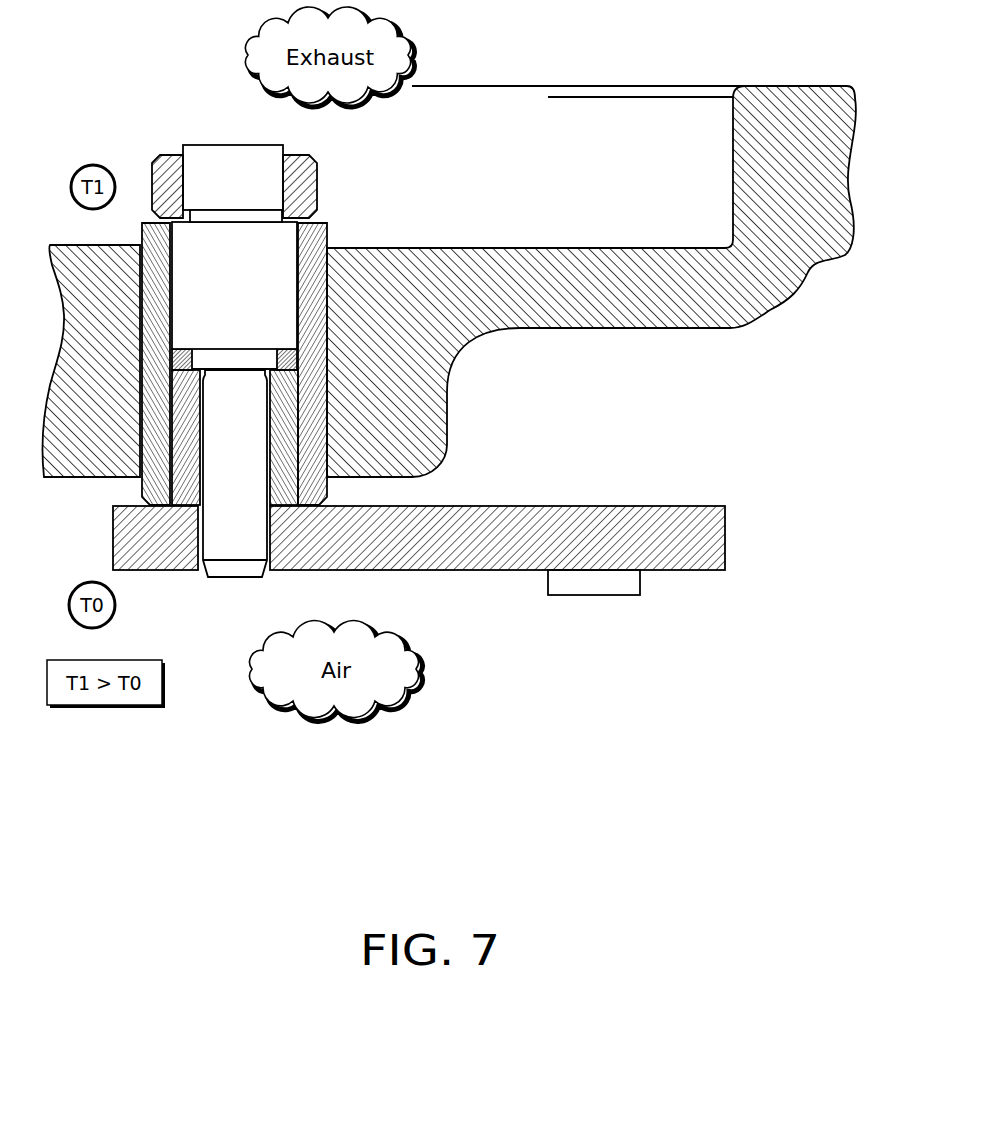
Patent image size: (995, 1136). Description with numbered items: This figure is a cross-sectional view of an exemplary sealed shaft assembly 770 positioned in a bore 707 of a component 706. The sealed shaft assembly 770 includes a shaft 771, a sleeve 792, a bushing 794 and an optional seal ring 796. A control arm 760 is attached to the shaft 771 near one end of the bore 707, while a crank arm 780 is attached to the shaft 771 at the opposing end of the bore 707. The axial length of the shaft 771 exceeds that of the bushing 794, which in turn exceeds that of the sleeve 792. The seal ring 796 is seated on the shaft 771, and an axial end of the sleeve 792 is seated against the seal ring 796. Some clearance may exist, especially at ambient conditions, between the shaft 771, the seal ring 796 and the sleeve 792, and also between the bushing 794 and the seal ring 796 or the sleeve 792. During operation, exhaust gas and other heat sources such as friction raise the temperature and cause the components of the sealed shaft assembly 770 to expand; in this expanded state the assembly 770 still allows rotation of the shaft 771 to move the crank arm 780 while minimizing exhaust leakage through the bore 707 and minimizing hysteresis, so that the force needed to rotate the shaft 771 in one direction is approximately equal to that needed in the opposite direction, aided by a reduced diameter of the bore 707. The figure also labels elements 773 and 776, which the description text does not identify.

The sealed shaft assembly 770 is at (156, 90).
The shaft 771 is at (235, 146).
The crank arm 780 is at (318, 188).
The bore 707 is at (329, 248).
The sensor body 773 is at (218, 289).
The component 706 is at (480, 300).
The sensor probe stem 776 is at (218, 459).
The seal ring 796 is at (290, 362).
The bushing 794 is at (312, 403).
The sleeve 792 is at (290, 455).
The control arm 760 is at (390, 548).